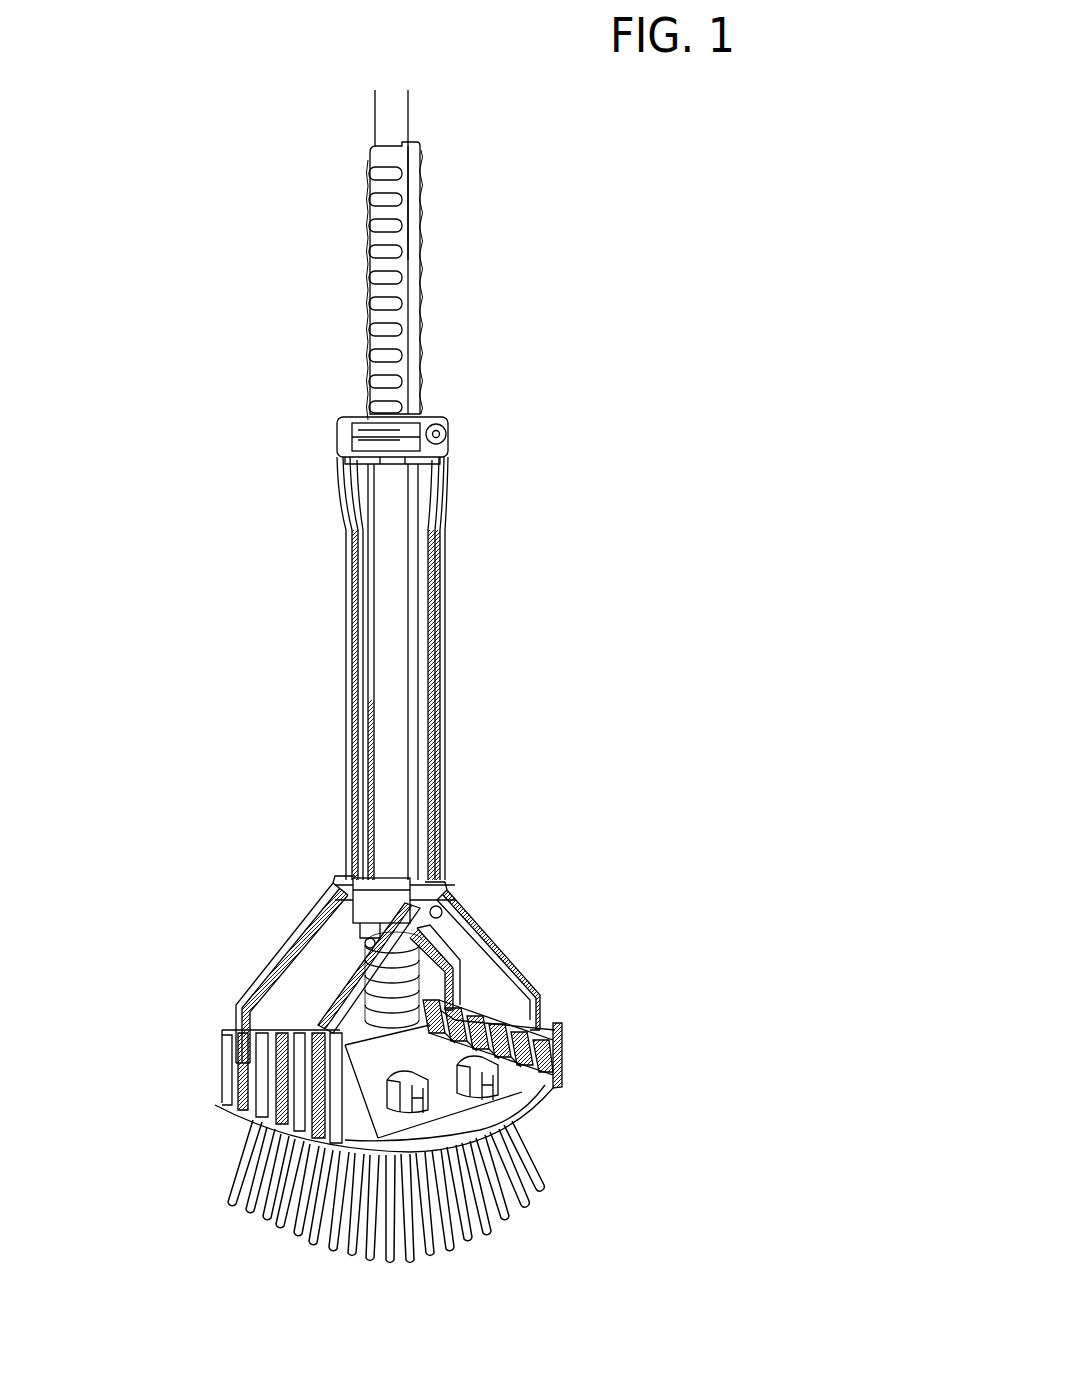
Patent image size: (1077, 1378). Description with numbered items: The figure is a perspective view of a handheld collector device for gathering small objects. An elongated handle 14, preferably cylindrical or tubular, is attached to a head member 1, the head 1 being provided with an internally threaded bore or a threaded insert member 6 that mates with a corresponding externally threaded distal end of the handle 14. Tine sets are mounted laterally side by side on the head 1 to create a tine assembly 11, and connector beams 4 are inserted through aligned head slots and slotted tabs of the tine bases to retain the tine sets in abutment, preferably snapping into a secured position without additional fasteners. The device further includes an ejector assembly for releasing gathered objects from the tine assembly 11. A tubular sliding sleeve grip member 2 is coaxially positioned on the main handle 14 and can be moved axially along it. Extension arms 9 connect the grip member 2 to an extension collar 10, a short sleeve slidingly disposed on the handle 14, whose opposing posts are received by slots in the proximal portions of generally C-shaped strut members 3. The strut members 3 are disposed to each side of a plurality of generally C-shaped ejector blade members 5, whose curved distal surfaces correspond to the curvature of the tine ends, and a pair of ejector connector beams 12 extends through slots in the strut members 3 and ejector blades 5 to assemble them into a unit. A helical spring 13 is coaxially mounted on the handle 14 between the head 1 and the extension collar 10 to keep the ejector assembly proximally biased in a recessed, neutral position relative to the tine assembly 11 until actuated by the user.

The head member 1 is at (340, 1040).
The sliding sleeve grip member 2 is at (415, 345).
The strut member 3 is at (318, 885).
The connector beam 4 is at (408, 1085).
The ejector blade member 5 is at (557, 1047).
The threaded insert member 6 is at (415, 975).
The extension arm 9 is at (440, 525).
The extension collar 10 is at (405, 878).
The tine assembly 11 is at (300, 1175).
The ejector connector beam 12 is at (470, 1030).
The helical spring 13 is at (350, 975).
The elongated handle 14 is at (390, 553).